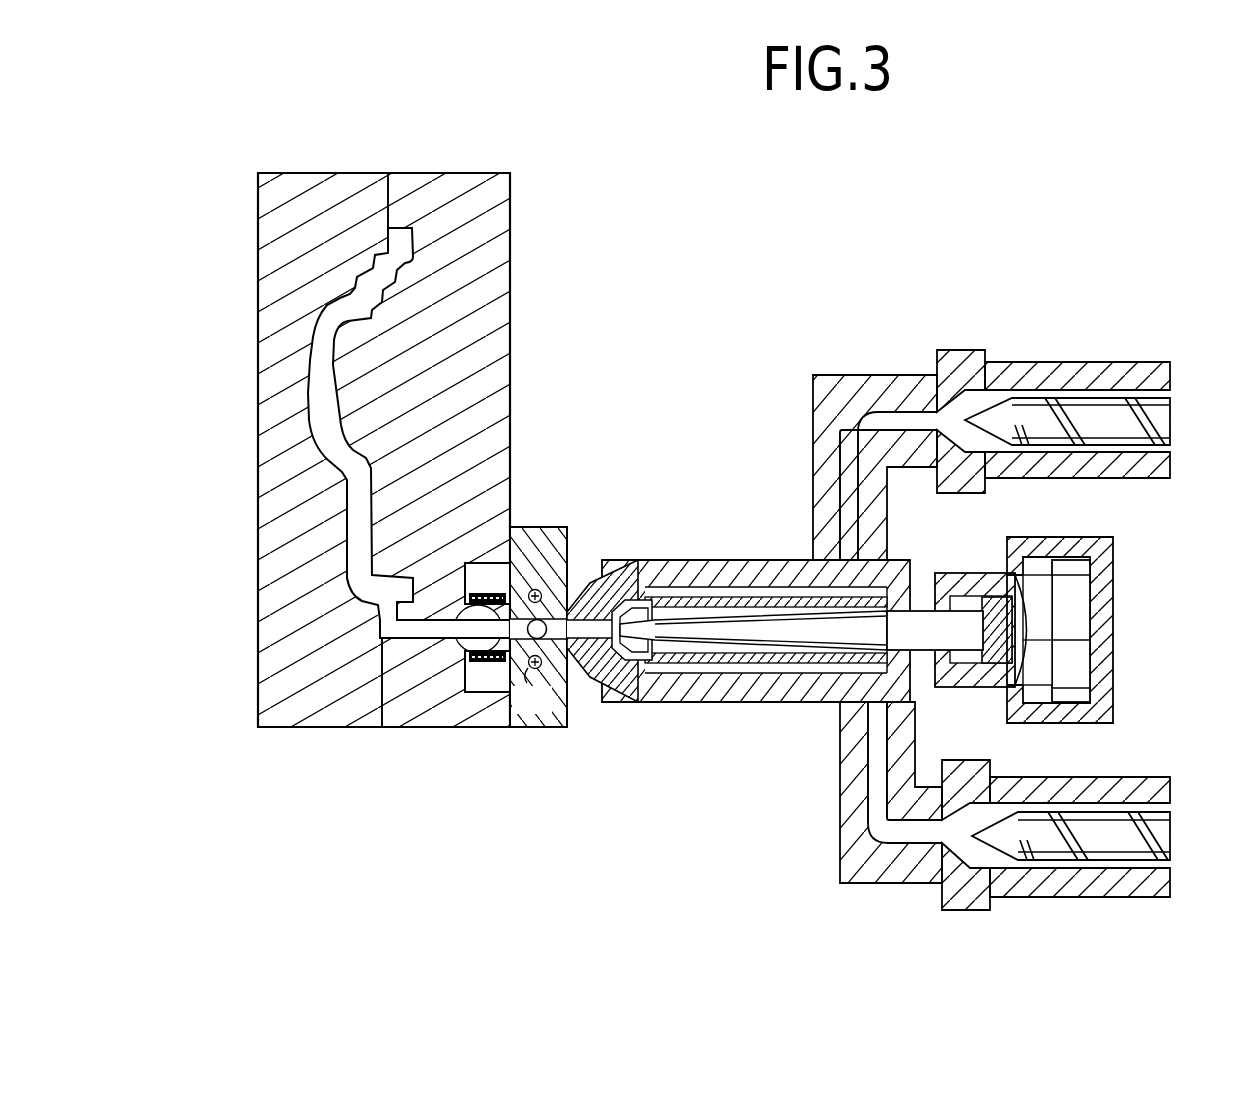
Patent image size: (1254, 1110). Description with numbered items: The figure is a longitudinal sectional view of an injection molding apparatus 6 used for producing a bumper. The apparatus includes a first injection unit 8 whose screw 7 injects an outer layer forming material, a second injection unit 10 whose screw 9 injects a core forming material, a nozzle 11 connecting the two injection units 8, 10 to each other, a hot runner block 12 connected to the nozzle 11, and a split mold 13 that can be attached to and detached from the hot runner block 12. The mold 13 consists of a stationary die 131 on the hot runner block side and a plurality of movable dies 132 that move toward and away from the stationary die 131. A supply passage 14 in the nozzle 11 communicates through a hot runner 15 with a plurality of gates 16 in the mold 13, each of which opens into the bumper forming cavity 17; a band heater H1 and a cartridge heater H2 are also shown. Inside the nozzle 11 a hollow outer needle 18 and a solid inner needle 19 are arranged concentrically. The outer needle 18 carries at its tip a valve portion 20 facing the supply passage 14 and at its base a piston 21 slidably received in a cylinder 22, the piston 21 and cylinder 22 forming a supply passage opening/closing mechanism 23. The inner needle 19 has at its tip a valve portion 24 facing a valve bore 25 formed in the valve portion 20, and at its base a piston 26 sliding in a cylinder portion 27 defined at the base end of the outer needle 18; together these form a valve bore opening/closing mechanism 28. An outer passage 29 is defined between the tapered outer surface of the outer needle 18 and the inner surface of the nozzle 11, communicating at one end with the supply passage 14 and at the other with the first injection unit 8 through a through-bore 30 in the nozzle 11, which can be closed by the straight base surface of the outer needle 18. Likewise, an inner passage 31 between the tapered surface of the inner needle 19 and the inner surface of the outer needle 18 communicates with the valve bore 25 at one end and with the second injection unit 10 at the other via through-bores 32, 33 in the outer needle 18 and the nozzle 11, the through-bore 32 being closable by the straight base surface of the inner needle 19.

The injection molding apparatus 6 is at (871, 421).
The screw 7 is at (1025, 410).
The first injection unit 8 is at (1099, 358).
The screw 9 is at (1037, 820).
The second injection unit 10 is at (987, 794).
The nozzle 11 is at (738, 623).
The hot runner block 12 is at (555, 653).
The split mold 13 is at (394, 474).
The stationary die 131 is at (500, 298).
The movable dies 132 is at (268, 232).
The supply passage 14 is at (565, 695).
The hot runner 15 is at (556, 733).
The gates 16 is at (417, 648).
The bumper forming cavity 17 is at (355, 540).
The hollow outer needle 18 is at (715, 590).
The solid inner needle 19 is at (762, 628).
The valve portion 20 is at (596, 682).
The piston 21 is at (1080, 625).
The cylinder 22 is at (1072, 548).
The supply passage opening/closing mechanism 23 is at (1091, 607).
The valve portion 24 is at (638, 602).
The valve bore 25 is at (592, 612).
The piston 26 is at (1010, 600).
The cylinder portion 27 is at (975, 597).
The valve bore opening/closing mechanism 28 is at (967, 629).
The outer passage 29 is at (735, 702).
The through-bore 30 is at (850, 568).
The inner passage 31 is at (678, 660).
The through-bore 32 is at (882, 630).
The through-bore 33 is at (878, 690).
The band heater H1 is at (488, 590).
The cartridge heater H2 is at (537, 589).